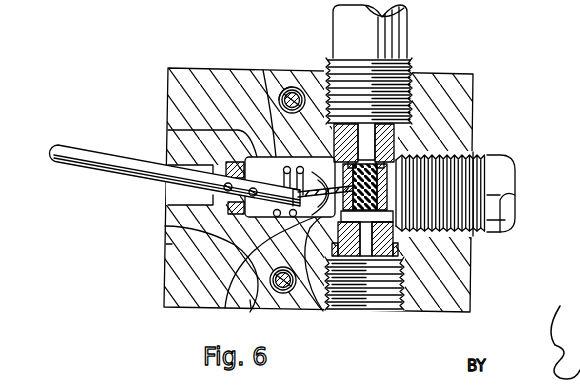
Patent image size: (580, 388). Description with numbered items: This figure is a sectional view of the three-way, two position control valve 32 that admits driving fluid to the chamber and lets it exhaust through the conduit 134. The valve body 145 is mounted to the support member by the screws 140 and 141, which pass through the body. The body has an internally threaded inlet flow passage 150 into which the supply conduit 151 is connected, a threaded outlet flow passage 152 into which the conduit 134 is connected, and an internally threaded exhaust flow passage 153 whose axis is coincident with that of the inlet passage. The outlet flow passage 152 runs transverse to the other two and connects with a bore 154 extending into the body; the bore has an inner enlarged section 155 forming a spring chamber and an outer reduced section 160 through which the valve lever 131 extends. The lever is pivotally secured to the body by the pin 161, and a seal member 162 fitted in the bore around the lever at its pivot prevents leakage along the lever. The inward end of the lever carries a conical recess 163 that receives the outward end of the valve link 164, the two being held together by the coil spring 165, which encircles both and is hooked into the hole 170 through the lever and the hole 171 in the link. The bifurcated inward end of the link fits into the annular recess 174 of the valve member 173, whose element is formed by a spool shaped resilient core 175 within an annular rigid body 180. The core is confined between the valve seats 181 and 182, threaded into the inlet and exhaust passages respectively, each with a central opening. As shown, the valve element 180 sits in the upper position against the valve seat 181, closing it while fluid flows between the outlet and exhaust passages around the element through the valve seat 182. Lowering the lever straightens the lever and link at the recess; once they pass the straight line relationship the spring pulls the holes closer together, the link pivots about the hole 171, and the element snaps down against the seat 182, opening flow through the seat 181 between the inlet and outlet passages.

The three-way control valve 32 is at (158, 44).
The valve lever 131 is at (76, 170).
The conduit 134 is at (500, 178).
The screw 140 is at (295, 95).
The screw 141 is at (291, 296).
The valve body 145 is at (165, 289).
The inlet flow passage 150 is at (407, 90).
The supply conduit 151 is at (412, 30).
The outlet flow passage 152 is at (503, 232).
The exhaust flow passage 153 is at (400, 292).
The bore 154 is at (247, 70).
The inner enlarged section 155 is at (169, 130).
The outer reduced section 160 is at (172, 207).
The pin 161 is at (150, 182).
The seal member 162 is at (166, 225).
The conical recess 163 is at (251, 309).
The valve link 164 is at (268, 92).
The coil spring 165 is at (226, 309).
The hole 170 is at (166, 244).
The hole 171 is at (324, 312).
The valve member 173 is at (470, 247).
The annular recess 174 is at (486, 163).
The resilient core 175 is at (382, 160).
The annular rigid body 180 is at (390, 195).
The valve seat 181 is at (387, 140).
The valve seat 182 is at (381, 262).